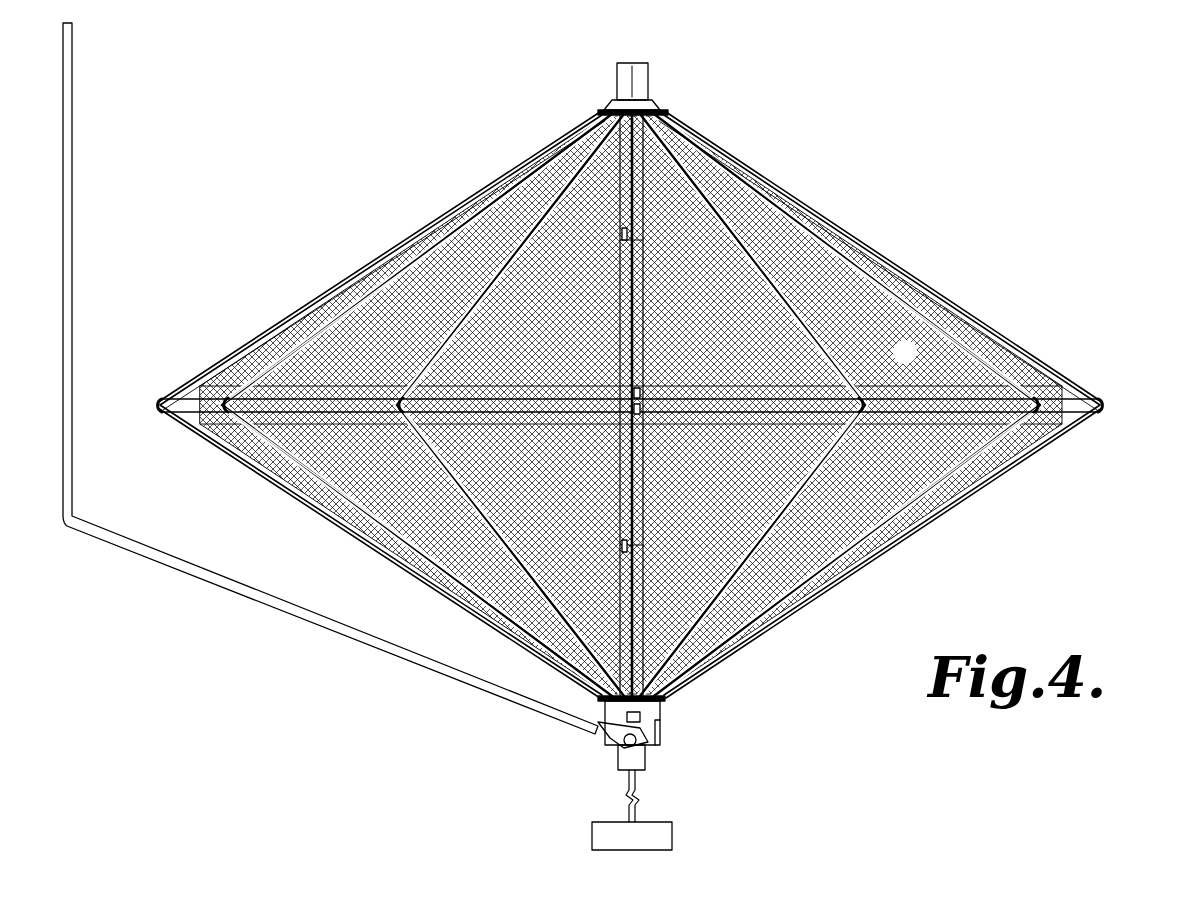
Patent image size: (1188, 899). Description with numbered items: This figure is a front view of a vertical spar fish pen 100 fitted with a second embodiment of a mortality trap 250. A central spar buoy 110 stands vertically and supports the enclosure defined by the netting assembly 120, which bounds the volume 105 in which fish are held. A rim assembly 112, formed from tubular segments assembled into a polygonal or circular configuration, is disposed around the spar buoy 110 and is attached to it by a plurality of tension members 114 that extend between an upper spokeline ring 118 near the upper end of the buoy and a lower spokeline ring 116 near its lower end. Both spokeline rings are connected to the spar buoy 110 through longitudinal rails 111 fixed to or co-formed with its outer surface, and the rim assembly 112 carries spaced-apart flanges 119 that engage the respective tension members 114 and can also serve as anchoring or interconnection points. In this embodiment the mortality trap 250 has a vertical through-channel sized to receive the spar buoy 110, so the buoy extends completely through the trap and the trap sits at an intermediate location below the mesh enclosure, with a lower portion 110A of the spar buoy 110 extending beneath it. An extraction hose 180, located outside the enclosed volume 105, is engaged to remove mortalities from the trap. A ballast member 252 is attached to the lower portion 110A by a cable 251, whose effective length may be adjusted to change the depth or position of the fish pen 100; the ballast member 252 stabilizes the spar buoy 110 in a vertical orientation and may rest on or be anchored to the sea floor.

The vertical spar fish pen 100 is at (937, 206).
The volume enclosed by the netting assembly 105 is at (907, 352).
The spar buoy 110 is at (650, 182).
The lower portion of the spar buoy 110A is at (618, 760).
The longitudinal rails 111 is at (617, 82).
The rim assembly 112 is at (1077, 392).
The tension members 114 is at (737, 207).
The lower spokeline ring 116 is at (665, 702).
The upper spokeline ring 118 is at (661, 108).
The flanges 119 is at (1108, 412).
The netting assembly 120 is at (424, 244).
The extraction hose 180 is at (72, 100).
The mortality trap 250 is at (682, 735).
The cable 251 is at (640, 816).
The ballast member 252 is at (672, 836).